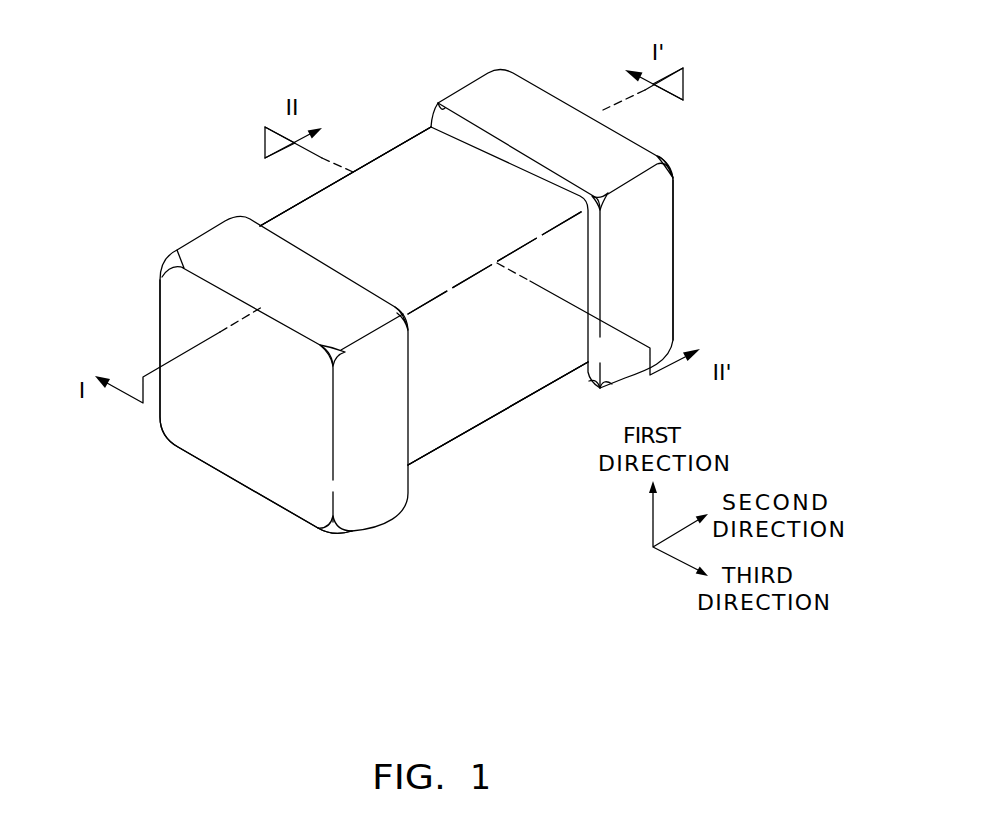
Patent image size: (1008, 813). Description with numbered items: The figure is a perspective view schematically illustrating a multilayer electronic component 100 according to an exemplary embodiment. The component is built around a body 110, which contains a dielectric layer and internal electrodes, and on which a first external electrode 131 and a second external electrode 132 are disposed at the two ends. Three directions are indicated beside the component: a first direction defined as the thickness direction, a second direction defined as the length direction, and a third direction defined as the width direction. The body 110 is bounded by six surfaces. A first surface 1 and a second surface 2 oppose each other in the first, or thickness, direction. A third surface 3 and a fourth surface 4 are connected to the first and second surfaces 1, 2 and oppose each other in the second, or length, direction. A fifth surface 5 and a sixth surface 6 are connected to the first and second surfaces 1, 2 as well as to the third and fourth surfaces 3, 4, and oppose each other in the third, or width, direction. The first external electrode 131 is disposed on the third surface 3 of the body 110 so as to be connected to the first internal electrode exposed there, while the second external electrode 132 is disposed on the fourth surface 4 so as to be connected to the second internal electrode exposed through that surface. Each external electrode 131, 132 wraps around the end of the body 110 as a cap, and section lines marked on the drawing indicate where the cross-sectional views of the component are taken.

The multilayer electronic component 100 is at (160, 33).
The body 110 is at (297, 233).
The first external electrode 131 is at (217, 247).
The second external electrode 132 is at (474, 103).
The first surface 1 is at (459, 399).
The second surface 2 is at (429, 168).
The third surface 3 is at (245, 442).
The fourth surface 4 is at (634, 234).
The fifth surface 5 is at (372, 198).
The sixth surface 6 is at (522, 370).